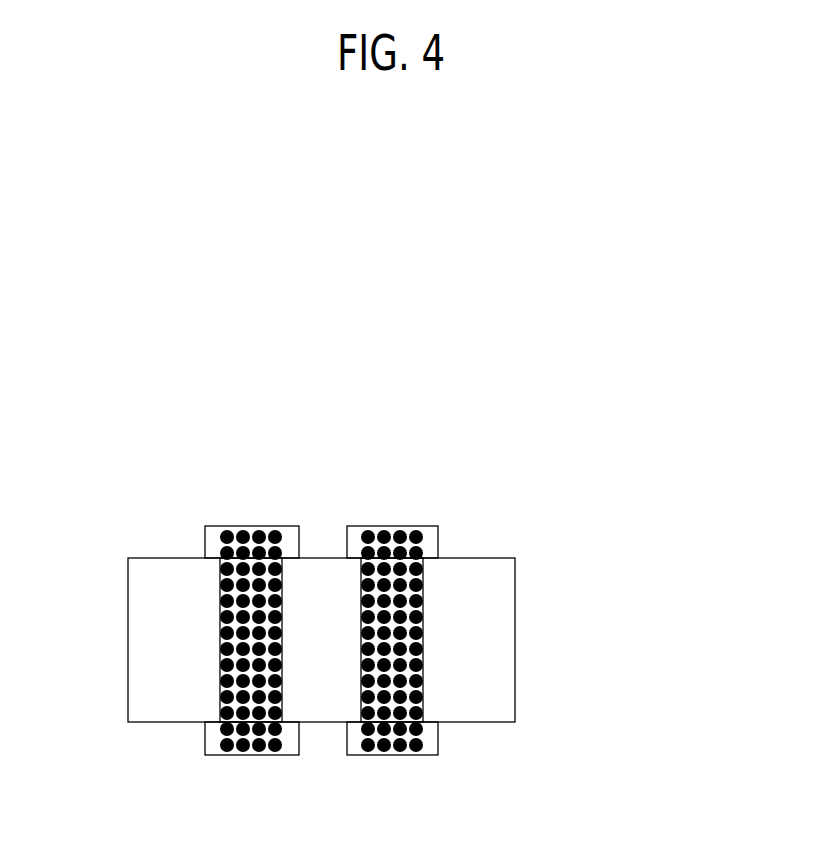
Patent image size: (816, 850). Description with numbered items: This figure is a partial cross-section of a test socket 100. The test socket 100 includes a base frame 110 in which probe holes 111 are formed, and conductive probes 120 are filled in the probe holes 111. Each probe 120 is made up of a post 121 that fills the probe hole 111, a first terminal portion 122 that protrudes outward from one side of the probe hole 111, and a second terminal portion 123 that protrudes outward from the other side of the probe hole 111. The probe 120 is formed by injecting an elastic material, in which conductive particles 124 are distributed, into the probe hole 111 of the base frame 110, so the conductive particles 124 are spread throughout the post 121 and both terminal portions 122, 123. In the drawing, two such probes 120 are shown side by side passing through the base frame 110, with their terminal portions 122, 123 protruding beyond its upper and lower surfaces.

The test socket 100 is at (326, 364).
The base frame 110 is at (520, 598).
The probe hole 111 is at (220, 672).
The conductive probe 120 is at (169, 644).
The post 121 is at (423, 672).
The first terminal portion 122 is at (428, 526).
The second terminal portion 123 is at (432, 755).
The conductive particles 124 is at (275, 755).